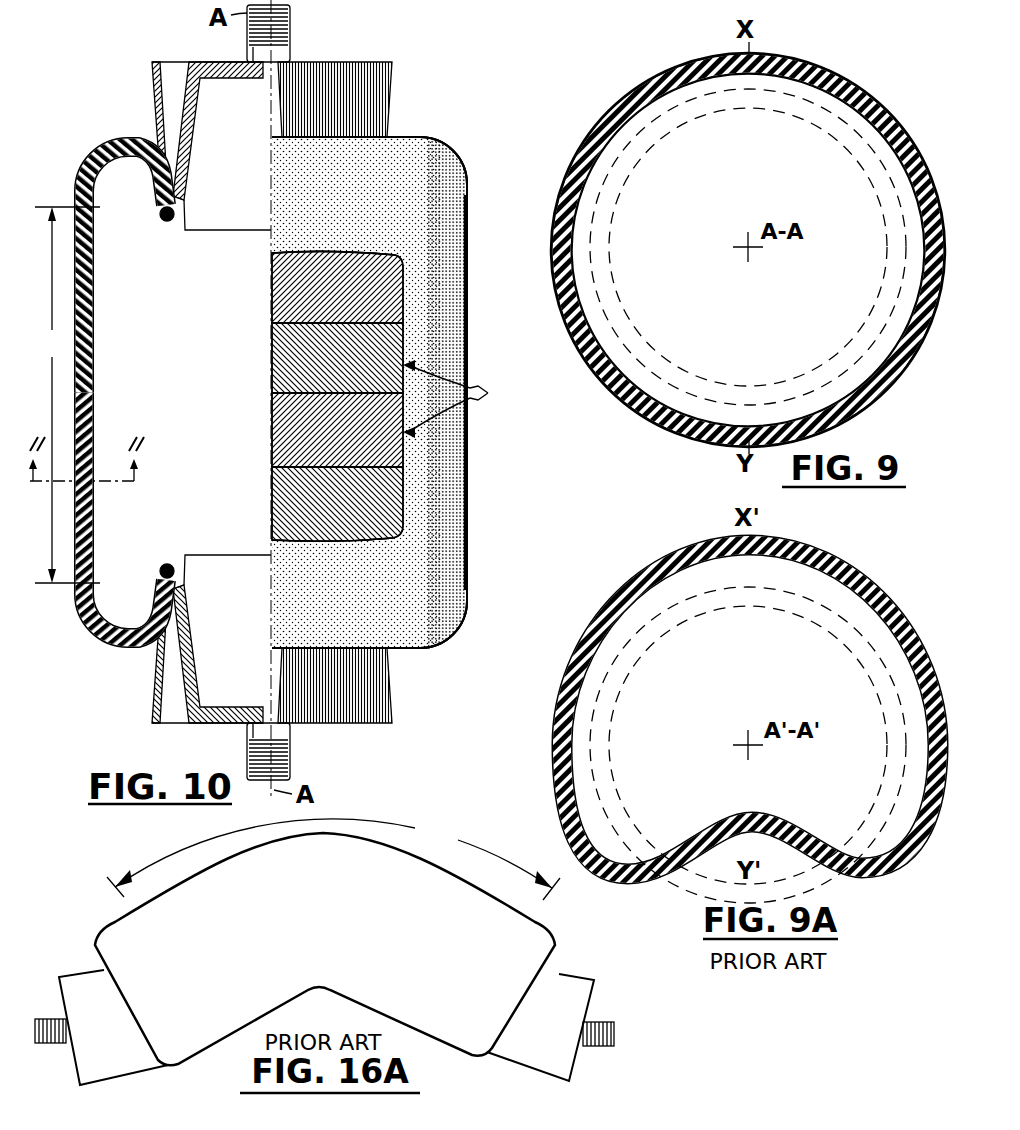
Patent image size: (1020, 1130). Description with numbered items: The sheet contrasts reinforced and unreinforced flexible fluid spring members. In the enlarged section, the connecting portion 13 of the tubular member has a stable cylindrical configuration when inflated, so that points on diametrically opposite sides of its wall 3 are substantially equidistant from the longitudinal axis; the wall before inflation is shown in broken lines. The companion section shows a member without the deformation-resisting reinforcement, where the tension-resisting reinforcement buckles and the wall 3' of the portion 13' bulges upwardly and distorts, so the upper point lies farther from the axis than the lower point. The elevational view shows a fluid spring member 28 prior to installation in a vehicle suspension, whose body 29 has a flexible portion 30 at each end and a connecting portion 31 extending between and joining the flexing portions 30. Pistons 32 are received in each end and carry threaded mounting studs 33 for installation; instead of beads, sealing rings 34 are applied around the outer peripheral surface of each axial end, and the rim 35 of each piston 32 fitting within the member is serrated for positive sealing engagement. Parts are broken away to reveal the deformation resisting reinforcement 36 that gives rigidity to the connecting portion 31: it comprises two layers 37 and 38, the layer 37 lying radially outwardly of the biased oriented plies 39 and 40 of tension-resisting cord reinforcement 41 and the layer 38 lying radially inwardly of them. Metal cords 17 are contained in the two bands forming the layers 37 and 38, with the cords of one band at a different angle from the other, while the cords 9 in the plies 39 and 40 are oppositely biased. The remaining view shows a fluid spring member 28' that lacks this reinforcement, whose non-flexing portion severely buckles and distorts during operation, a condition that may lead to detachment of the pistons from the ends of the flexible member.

In FIG. 10, the threaded mounting studs 33 is at (290, 35).
In FIG. 16A, the threaded mounting studs 33 is at (47, 1044).
In FIG. 10, the pistons 32 is at (150, 92).
In FIG. 16A, the pistons 32 is at (70, 980).
In FIG. 10, the flexible portion 30 is at (110, 140).
In FIG. 10, the fluid spring member 28 is at (382, 359).
In FIG. 10, the sealing rings 34 is at (161, 221).
In FIG. 10, the rim 35 is at (184, 208).
In FIG. 10, the metal cords 17 is at (305, 270).
In FIG. 10, the layer 37 is at (272, 285).
In FIG. 10, the deformation resisting reinforcement 36 is at (265, 318).
In FIG. 10, the cords 9 is at (297, 356).
In FIG. 10, the ply 39 is at (272, 385).
In FIG. 10, the ply 40 is at (272, 440).
In FIG. 10, the tension-resisting cord reinforcement 41 is at (458, 399).
In FIG. 10, the layer 38 is at (272, 495).
In FIG. 10, the body 29 is at (467, 517).
In FIG. 10, the connecting portion 31 is at (67, 395).
In FIG. 16A, the connecting portion 31 is at (333, 859).
In FIG. 9, the connecting portion 13 is at (754, 219).
In FIG. 9, the wall 3 is at (748, 250).
In FIG. 9A, the connecting portion 13' is at (748, 705).
In FIG. 9A, the wall 3' is at (750, 709).
In FIG. 16A, the fluid spring member 28' is at (325, 972).